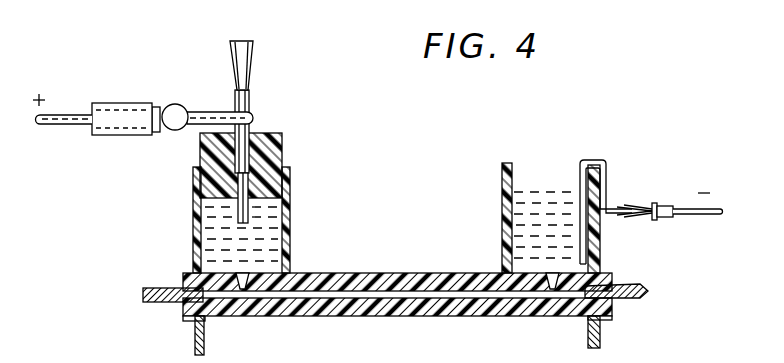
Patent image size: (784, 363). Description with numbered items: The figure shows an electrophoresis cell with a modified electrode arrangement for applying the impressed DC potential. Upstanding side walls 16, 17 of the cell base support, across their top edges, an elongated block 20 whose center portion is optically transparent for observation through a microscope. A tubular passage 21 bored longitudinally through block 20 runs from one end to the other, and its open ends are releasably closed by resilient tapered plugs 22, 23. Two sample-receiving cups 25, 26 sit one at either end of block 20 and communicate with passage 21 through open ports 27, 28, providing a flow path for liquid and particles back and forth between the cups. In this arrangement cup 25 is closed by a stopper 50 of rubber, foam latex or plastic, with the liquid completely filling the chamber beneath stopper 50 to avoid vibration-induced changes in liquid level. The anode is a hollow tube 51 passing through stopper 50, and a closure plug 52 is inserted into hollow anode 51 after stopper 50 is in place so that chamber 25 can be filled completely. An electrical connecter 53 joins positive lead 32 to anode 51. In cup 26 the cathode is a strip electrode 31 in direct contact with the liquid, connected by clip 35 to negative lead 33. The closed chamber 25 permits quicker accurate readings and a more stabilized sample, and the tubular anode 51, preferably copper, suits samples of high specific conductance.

The side wall 16 is at (588, 340).
The side wall 17 is at (195, 350).
The elongated block 20 is at (455, 254).
The tubular passage 21 is at (352, 298).
The tapered plug 22 is at (143, 295).
The tapered plug 23 is at (649, 293).
The sample-receiving cup 25 is at (290, 232).
The sample-receiving cup 26 is at (528, 173).
The open port 27 is at (245, 273).
The open port 28 is at (551, 273).
The cathode strip electrode 31 is at (606, 177).
The positive lead 32 is at (62, 121).
The negative lead 33 is at (718, 212).
The clip 35 is at (665, 217).
The stopper 50 is at (282, 143).
The hollow tube anode 51 is at (251, 101).
The closure plug 52 is at (257, 24).
The electrical connecter 53 is at (205, 113).